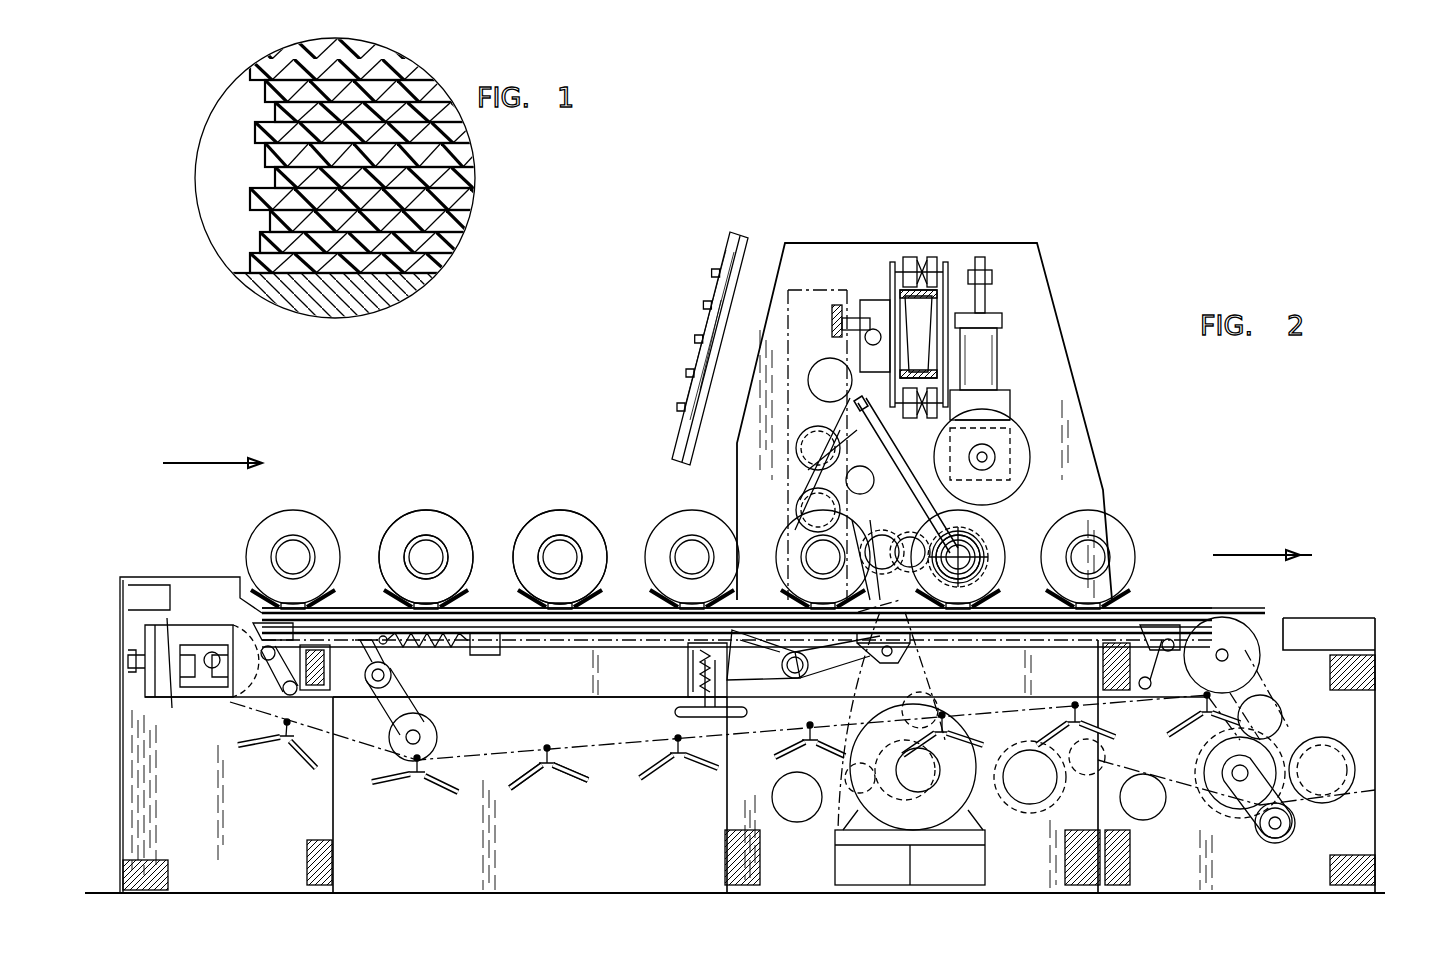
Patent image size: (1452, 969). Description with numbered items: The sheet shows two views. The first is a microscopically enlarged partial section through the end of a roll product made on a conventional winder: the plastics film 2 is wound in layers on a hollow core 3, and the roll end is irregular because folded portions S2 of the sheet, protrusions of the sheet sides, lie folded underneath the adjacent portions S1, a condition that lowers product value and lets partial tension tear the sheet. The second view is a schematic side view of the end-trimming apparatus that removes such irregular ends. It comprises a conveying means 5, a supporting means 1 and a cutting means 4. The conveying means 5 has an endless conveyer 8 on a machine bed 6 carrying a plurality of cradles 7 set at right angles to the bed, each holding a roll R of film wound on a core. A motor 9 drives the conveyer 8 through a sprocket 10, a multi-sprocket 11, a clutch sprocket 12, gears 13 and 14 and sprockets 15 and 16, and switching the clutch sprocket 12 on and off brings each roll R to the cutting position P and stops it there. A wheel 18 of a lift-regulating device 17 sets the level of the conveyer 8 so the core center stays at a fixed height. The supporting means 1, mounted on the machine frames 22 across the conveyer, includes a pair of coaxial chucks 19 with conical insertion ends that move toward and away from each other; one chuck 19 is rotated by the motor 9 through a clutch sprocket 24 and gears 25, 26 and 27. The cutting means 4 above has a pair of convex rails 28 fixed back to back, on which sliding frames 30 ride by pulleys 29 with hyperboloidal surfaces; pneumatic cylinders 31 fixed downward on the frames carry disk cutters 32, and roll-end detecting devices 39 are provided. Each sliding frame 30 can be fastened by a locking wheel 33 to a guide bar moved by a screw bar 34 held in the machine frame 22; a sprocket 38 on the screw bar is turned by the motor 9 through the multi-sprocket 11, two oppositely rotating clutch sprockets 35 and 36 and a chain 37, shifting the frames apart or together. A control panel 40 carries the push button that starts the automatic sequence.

In FIG. 1, the adjacent portions of the sheet S1 is at (274, 112).
In FIG. 1, the folded portions of the sheet S2 is at (252, 70).
In FIG. 1, the hollow core 3 is at (297, 288).
In FIG. 2, the hollow core 3 is at (408, 548).
In FIG. 2, the supporting means 1 is at (1025, 522).
In FIG. 2, the plastics film 2 is at (410, 522).
In FIG. 2, the cutting means 4 is at (1010, 416).
In FIG. 2, the conveying means 5 is at (492, 585).
In FIG. 2, the machine bed 6 is at (530, 697).
In FIG. 2, the cradle 7 is at (540, 768).
In FIG. 2, the endless conveyer 8 is at (612, 757).
In FIG. 2, the motor 9 is at (870, 745).
In FIG. 2, the sprocket 10 is at (888, 845).
In FIG. 2, the multi-sprocket 11 is at (795, 825).
In FIG. 2, the clutch sprocket 12 is at (1028, 800).
In FIG. 2, the gear 13 is at (1296, 824).
In FIG. 2, the gear 14 is at (1278, 752).
In FIG. 2, the sprocket 15 is at (1330, 762).
In FIG. 2, the sprocket 16 is at (1248, 630).
In FIG. 2, the lift-regulating device 17 is at (768, 692).
In FIG. 2, the wheel 18 is at (678, 711).
In FIG. 2, the chuck 19 is at (985, 549).
In FIG. 2, the machine frame 22 is at (1035, 275).
In FIG. 2, the clutch sprocket 24 is at (990, 757).
In FIG. 2, the gear 25 is at (905, 612).
In FIG. 2, the gear 26 is at (882, 535).
In FIG. 2, the gear 27 is at (910, 535).
In FIG. 2, the convex rail 28 is at (936, 257).
In FIG. 2, the pulley 29 is at (910, 257).
In FIG. 2, the sliding frame 30 is at (890, 252).
In FIG. 2, the pneumatic cylinder 31 is at (998, 352).
In FIG. 2, the disk cutter 32 is at (1005, 460).
In FIG. 2, the locking wheel 33 is at (835, 305).
In FIG. 2, the screw bar 34 is at (850, 318).
In FIG. 2, the clutch sprocket 35 is at (795, 448).
In FIG. 2, the clutch sprocket 36 is at (798, 511).
In FIG. 2, the chain 37 is at (838, 400).
In FIG. 2, the sprocket 38 is at (862, 338).
In FIG. 2, the roll-end detecting device 39 is at (877, 470).
In FIG. 2, the control panel 40 is at (728, 240).
In FIG. 2, the cutting position P is at (978, 557).
In FIG. 2, the roll R is at (432, 520).